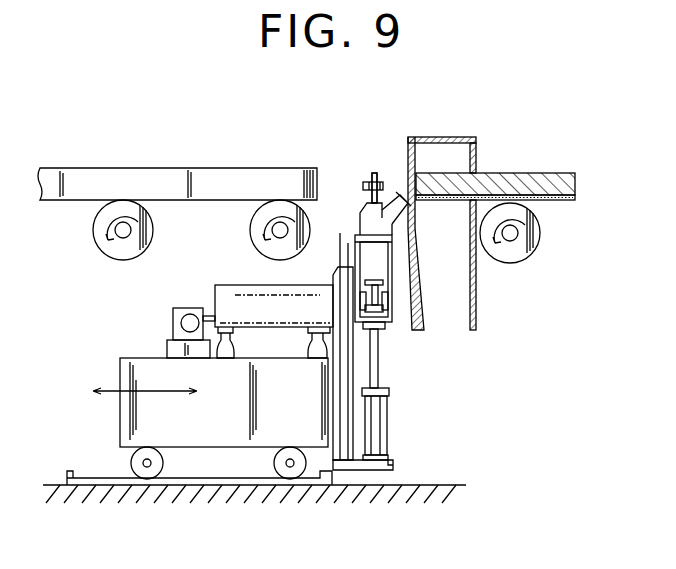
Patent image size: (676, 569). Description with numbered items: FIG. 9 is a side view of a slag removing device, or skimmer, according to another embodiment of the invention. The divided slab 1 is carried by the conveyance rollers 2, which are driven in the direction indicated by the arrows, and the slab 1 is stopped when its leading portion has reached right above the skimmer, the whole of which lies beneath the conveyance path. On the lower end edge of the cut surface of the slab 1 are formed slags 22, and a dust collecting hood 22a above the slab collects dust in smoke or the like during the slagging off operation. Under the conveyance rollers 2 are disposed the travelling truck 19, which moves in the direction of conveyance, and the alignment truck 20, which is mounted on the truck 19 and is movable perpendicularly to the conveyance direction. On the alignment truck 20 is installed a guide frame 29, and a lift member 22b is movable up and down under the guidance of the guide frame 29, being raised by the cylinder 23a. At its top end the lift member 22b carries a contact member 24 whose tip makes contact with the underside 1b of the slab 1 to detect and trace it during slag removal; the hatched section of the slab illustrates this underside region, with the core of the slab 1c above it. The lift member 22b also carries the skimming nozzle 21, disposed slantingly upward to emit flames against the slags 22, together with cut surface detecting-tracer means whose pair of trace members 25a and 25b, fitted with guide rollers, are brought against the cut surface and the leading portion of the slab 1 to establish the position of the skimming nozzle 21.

The divided slab 1 is at (147, 177).
The underside of the slab 1b is at (560, 200).
The core layer of plate 1c is at (538, 185).
The conveyance rollers 2 is at (523, 248).
The travelling truck 19 is at (222, 438).
The alignment truck 20 is at (230, 290).
The skimming nozzle 21 is at (398, 200).
The slags 22 is at (448, 208).
The dust collecting hood 22a is at (441, 137).
The lift member 22b is at (396, 278).
The cylinder 23a is at (378, 442).
The contact member 24 is at (373, 218).
The trace member 25a is at (368, 200).
The trace member 25b is at (374, 188).
The guide frame 29 is at (343, 413).